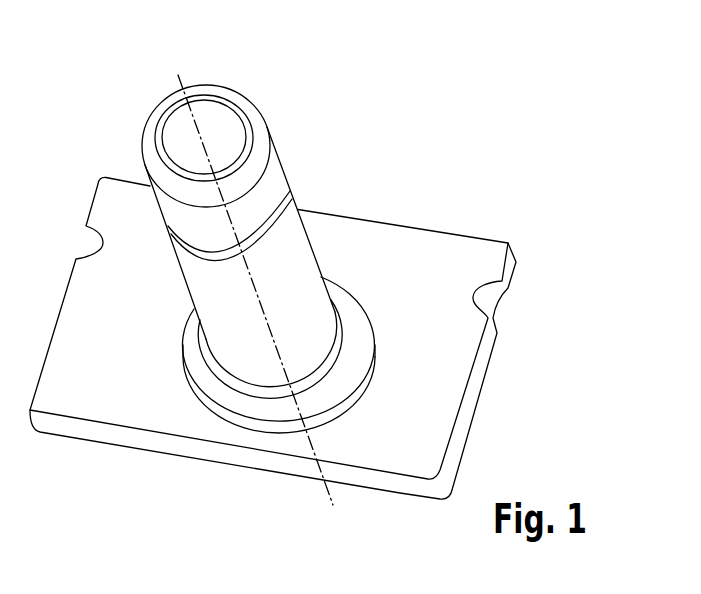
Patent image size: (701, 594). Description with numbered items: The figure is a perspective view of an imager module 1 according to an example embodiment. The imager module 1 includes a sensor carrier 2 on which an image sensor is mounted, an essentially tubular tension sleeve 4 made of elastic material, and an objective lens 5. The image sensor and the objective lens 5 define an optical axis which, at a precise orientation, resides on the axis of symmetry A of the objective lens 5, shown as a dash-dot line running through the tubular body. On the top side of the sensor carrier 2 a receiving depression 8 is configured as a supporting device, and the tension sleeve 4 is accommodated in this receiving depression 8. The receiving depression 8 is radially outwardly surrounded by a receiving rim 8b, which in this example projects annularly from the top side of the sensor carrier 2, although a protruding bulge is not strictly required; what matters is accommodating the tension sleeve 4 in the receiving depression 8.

The imager module 1 is at (278, 266).
The sensor carrier 2 is at (444, 358).
The tension sleeve 4 is at (288, 239).
The objective lens 5 is at (163, 203).
The receiving depression 8 is at (270, 398).
The receiving rim 8b is at (231, 400).
The axis of symmetry A is at (190, 83).